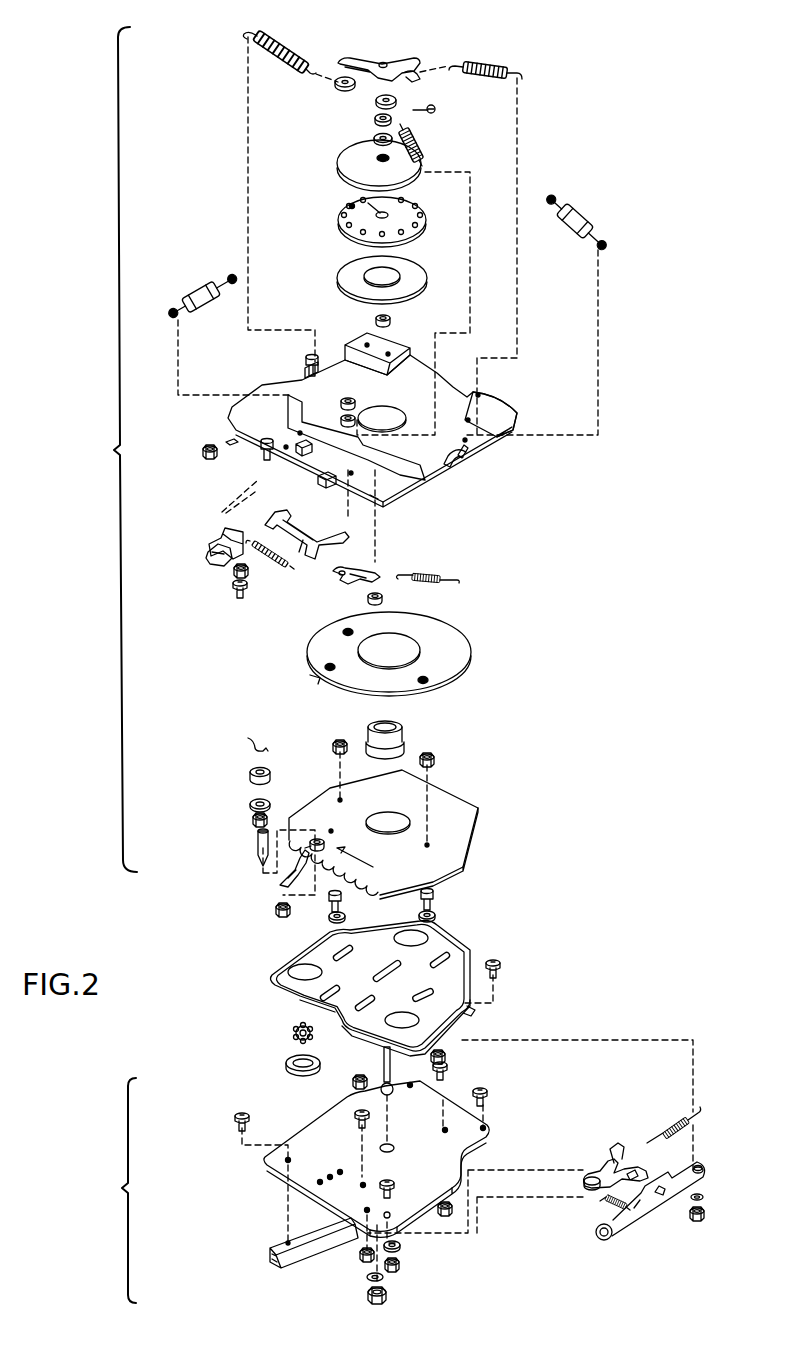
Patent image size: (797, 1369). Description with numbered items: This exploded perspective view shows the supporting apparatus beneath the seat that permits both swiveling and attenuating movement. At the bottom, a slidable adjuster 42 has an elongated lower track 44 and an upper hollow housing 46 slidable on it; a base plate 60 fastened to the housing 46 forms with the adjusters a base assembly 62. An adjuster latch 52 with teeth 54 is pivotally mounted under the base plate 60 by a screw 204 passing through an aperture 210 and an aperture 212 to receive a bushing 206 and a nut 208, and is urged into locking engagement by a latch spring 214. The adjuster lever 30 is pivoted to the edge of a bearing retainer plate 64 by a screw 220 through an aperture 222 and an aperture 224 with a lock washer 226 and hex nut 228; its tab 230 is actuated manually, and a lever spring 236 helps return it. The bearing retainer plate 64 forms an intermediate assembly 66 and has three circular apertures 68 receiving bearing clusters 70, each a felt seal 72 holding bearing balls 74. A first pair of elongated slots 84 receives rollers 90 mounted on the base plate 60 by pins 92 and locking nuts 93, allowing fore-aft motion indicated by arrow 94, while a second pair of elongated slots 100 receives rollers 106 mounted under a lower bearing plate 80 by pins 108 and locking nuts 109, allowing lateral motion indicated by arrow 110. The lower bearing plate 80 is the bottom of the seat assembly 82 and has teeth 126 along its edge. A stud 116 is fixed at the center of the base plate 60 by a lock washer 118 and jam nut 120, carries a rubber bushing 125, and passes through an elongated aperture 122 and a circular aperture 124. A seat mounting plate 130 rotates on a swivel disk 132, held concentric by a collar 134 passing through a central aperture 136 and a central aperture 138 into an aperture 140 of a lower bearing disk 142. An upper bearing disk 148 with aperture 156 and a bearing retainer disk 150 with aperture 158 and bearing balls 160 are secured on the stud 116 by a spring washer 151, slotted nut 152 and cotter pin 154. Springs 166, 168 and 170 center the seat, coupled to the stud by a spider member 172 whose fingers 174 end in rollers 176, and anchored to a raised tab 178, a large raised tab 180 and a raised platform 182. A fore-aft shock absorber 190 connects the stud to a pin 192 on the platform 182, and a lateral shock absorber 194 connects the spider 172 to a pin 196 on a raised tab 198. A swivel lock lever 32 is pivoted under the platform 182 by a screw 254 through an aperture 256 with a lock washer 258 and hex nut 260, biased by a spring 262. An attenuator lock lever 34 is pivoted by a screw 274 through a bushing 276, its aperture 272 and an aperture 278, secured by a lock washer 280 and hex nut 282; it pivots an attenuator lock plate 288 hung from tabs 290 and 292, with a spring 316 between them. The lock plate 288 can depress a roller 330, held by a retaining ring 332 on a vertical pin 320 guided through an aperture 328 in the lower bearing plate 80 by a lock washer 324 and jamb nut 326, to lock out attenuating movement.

The adjuster lever 30 is at (644, 1214).
The swivel lock lever 32 is at (355, 580).
The attenuator lock lever 34 is at (220, 560).
The slidable adjuster 42 is at (305, 1228).
The elongated lower track 44 is at (273, 1272).
The upper hollow housing 46 is at (275, 1247).
The adjuster latch 52 is at (605, 1167).
The teeth 54 is at (618, 1147).
The base plate 60 is at (446, 1104).
The base assembly 62 is at (118, 1190).
The bearing retainer plate 64 is at (452, 943).
The intermediate assembly 66 is at (252, 966).
The circular apertures 68 is at (432, 937).
The bearing clusters 70 is at (292, 1060).
The felt seal 72 is at (308, 1076).
The bearing balls 74 is at (298, 1030).
The lower bearing plate 80 is at (472, 840).
The seat assembly 82 is at (111, 449).
The first pair of elongated slots 84 is at (432, 964).
The rollers 90 is at (357, 1074).
The pins 92 is at (434, 1070).
The locking nuts 93 is at (447, 1213).
The double headed arrow 94 is at (363, 965).
The second pair of elongated slots 100 is at (343, 958).
The rollers 106 is at (348, 917).
The pins 108 is at (346, 900).
The locking nuts 109 is at (333, 745).
The double headed arrow 110 is at (368, 852).
The stud 116 is at (384, 1052).
The lock washer 118 is at (368, 1279).
The jam nut 120 is at (371, 1304).
The elongated aperture 122 is at (402, 965).
The circular aperture 124 is at (386, 814).
The rubber bushing 125 is at (392, 322).
The teeth 126 is at (282, 880).
The seat mounting plate 130 is at (497, 450).
The swivel disk 132 is at (468, 650).
The collar 134 is at (403, 734).
The central circular aperture 136 is at (405, 642).
The central circular aperture 138 is at (393, 410).
The central circular aperture 140 is at (365, 270).
The lower bearing disk 142 is at (420, 271).
The upper bearing disk 148 is at (412, 175).
The bearing retainer disk 150 is at (423, 230).
The spring washer 151 is at (371, 136).
The slotted nut 152 is at (372, 116).
The cotter pin 154 is at (437, 106).
The central aperture 156 is at (374, 158).
The central aperture 158 is at (350, 205).
The bearing balls 160 is at (415, 206).
The spring 166 is at (284, 44).
The spring 168 is at (482, 62).
The spring 170 is at (414, 131).
The spider member 172 is at (366, 56).
The fingers 174 is at (397, 85).
The roller 176 is at (418, 70).
The raised tab 178 is at (304, 363).
The large raised tab 180 is at (479, 394).
The raised platform 182 is at (383, 502).
The fore-aft shock absorber 190 is at (208, 306).
The pin 192 is at (303, 461).
The lateral shock absorber 194 is at (594, 212).
The pin 196 is at (448, 480).
The raised tab 198 is at (471, 460).
The screw 204 is at (390, 1185).
The bushing 206 is at (403, 1247).
The nut 208 is at (403, 1266).
The aperture 210 is at (389, 1212).
The aperture 212 is at (585, 1183).
The latch spring 214 is at (680, 1122).
The screw 220 is at (497, 962).
The aperture 222 is at (474, 1012).
The aperture 224 is at (702, 1170).
The lock washer 226 is at (703, 1195).
The hex nut 228 is at (705, 1216).
The tab 230 is at (596, 1241).
The lever spring 236 is at (602, 1204).
The screw 254 is at (383, 598).
The aperture 256 is at (351, 476).
The lock washer 258 is at (343, 414).
The hex nut 260 is at (350, 398).
The spring 262 is at (421, 575).
The aperture 272 is at (223, 534).
The screw 274 is at (240, 596).
The bushing 276 is at (248, 570).
The aperture 278 is at (282, 438).
The lock washer 280 is at (232, 447).
The hex nut 282 is at (206, 457).
The attenuator lock plate 288 is at (342, 524).
The tab 290 is at (272, 456).
The tab 292 is at (324, 492).
The spring 316 is at (262, 550).
The pin 320 is at (256, 839).
The lock washer 324 is at (252, 818).
The jamb nut 326 is at (252, 803).
The aperture 328 is at (318, 838).
The roller 330 is at (252, 772).
The retaining ring 332 is at (248, 738).